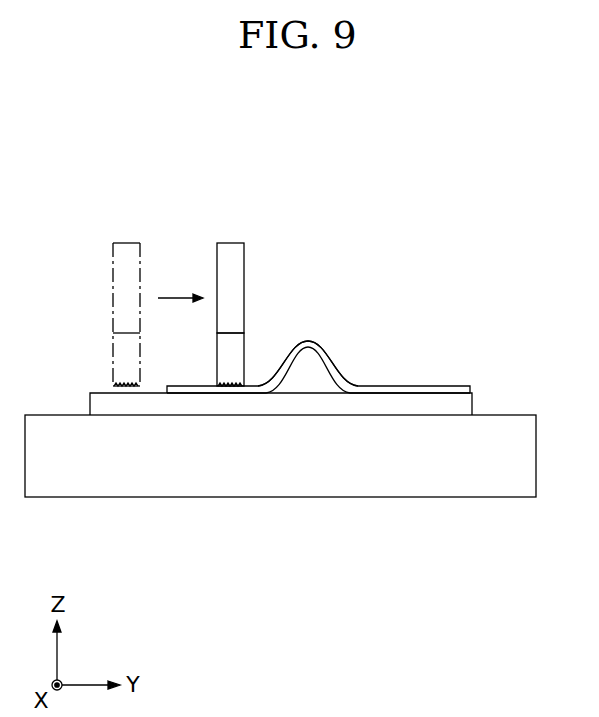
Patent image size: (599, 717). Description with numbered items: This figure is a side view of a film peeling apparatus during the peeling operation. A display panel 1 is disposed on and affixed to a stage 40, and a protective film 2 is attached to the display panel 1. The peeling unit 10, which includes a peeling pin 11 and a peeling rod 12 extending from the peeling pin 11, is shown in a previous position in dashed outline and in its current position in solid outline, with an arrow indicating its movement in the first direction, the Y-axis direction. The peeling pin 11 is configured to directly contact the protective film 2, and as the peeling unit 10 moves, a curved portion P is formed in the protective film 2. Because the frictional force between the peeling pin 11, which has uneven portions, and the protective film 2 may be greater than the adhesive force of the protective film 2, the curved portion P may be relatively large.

The display panel 1 is at (354, 403).
The protective film 2 is at (200, 392).
The peeling unit 10 is at (239, 314).
The peeling pin 11 is at (271, 336).
The peeling rod 12 is at (244, 278).
The stage 40 is at (430, 488).
The curved portion P is at (310, 342).